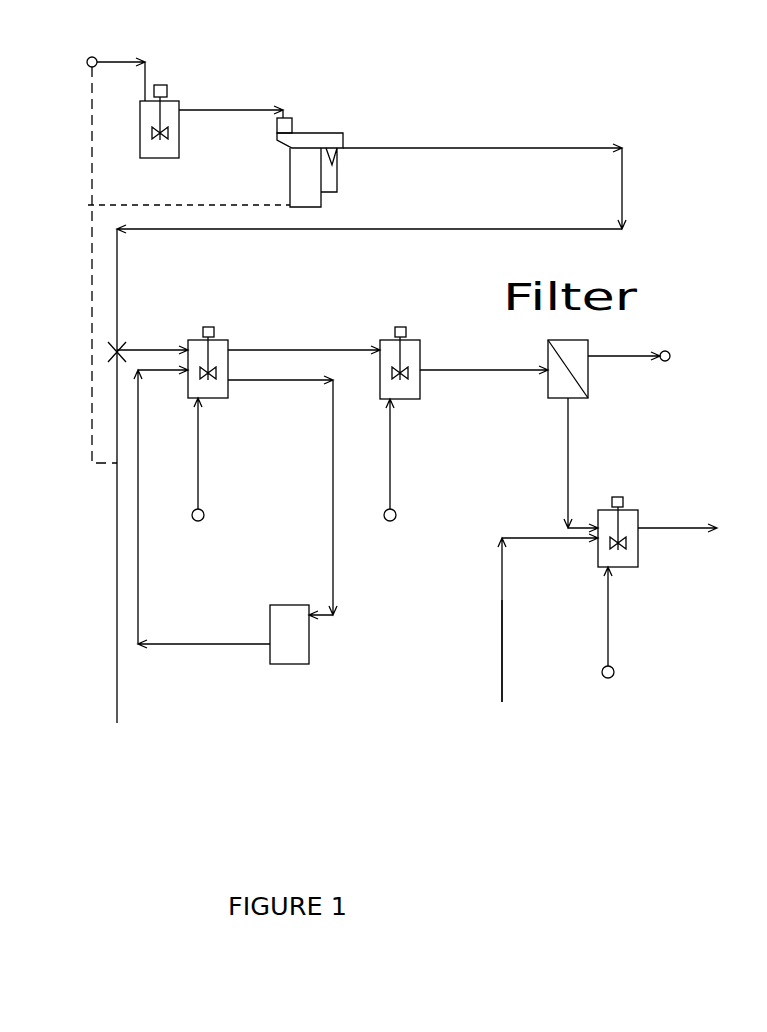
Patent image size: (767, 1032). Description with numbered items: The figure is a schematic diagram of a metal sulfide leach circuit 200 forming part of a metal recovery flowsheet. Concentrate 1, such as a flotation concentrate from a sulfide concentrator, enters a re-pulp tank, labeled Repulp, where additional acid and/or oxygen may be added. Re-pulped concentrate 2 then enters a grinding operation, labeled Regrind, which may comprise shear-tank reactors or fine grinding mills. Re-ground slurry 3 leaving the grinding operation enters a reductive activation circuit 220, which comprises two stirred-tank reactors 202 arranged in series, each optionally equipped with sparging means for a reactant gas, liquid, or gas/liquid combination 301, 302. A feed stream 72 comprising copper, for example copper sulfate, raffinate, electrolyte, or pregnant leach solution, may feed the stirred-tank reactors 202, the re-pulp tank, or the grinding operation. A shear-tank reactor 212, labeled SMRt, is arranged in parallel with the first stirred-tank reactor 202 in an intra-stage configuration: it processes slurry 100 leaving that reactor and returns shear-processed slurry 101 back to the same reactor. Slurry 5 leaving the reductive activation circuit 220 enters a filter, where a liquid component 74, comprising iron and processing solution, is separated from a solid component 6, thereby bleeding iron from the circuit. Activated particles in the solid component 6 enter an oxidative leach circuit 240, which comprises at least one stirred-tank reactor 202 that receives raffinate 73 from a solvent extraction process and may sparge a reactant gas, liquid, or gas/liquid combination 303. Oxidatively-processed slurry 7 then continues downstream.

The concentrate 1 is at (157, 111).
The re-pulped concentrate 2 is at (231, 93).
The re-ground slurry 3 is at (484, 169).
The slurry 5 is at (484, 352).
The solid component 6 is at (584, 465).
The oxidatively-processed slurry 7 is at (677, 508).
The feed stream 72 is at (349, 475).
The raffinate 73 is at (483, 654).
The liquid component 74 is at (629, 338).
The slurry 100 is at (317, 497).
The return stream from SMRt unit 101 is at (202, 507).
The metal sulfide leach circuit 200 is at (636, 96).
The stirred-tank reactor 202 is at (192, 332).
The shear-tank reactor 212 is at (267, 660).
The reductive activation circuit 220 is at (223, 292).
The oxidative leach circuit 240 is at (638, 468).
The reactant gas, liquid, or gas/liquid combination 301 is at (231, 459).
The reactant gas, liquid, or gas/liquid combination 302 is at (423, 460).
The reactant gas, liquid, or gas/liquid combination 303 is at (641, 622).